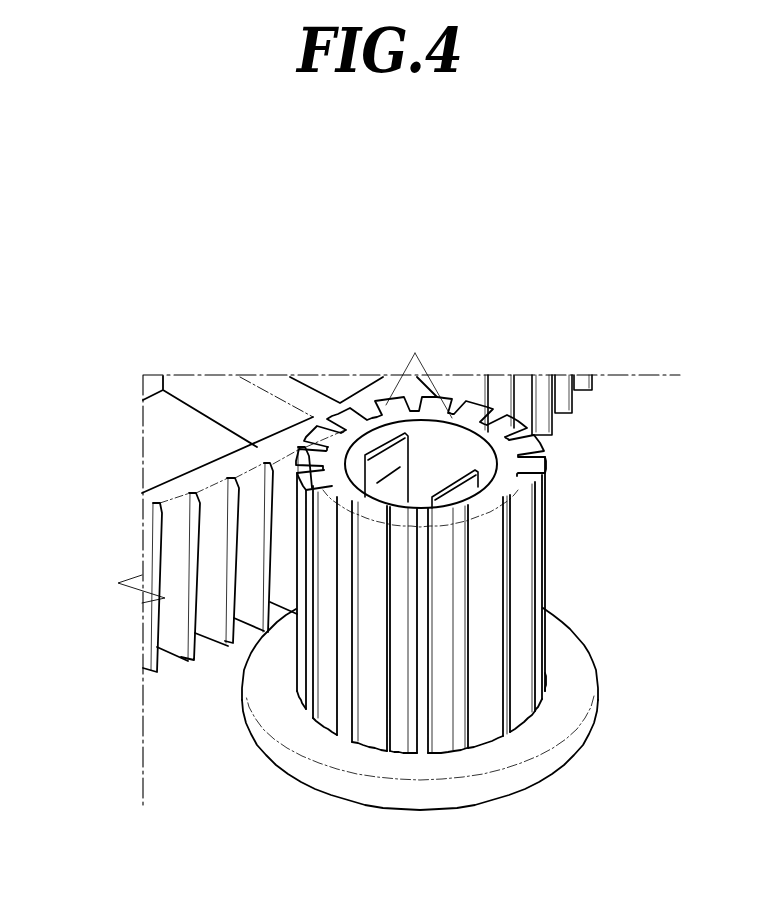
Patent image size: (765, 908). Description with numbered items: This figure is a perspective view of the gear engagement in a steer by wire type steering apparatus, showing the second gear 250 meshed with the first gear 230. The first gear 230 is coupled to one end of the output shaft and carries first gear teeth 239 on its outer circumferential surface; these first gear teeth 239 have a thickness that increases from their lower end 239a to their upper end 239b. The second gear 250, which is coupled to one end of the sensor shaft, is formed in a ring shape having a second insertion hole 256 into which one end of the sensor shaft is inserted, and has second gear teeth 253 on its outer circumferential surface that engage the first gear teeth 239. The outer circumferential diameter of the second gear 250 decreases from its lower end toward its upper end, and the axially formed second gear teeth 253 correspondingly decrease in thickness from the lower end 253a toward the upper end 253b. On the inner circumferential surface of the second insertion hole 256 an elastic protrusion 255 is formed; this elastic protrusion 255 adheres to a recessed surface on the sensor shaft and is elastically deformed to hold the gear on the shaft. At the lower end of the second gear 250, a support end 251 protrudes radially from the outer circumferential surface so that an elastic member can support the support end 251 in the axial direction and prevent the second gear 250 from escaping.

The first gear 230 is at (230, 397).
The first gear teeth 239 is at (206, 591).
The lower end of the first gear teeth 239a is at (215, 678).
The upper end of the first gear teeth 239b is at (213, 458).
The second gear 250 is at (451, 600).
The support end 251 is at (568, 660).
The second gear teeth 253 is at (464, 640).
The lower end of the second gear teeth 253a is at (402, 748).
The upper end of the second gear teeth 253b is at (404, 527).
The elastic protrusion 255 is at (390, 458).
The second insertion hole 256 is at (432, 442).